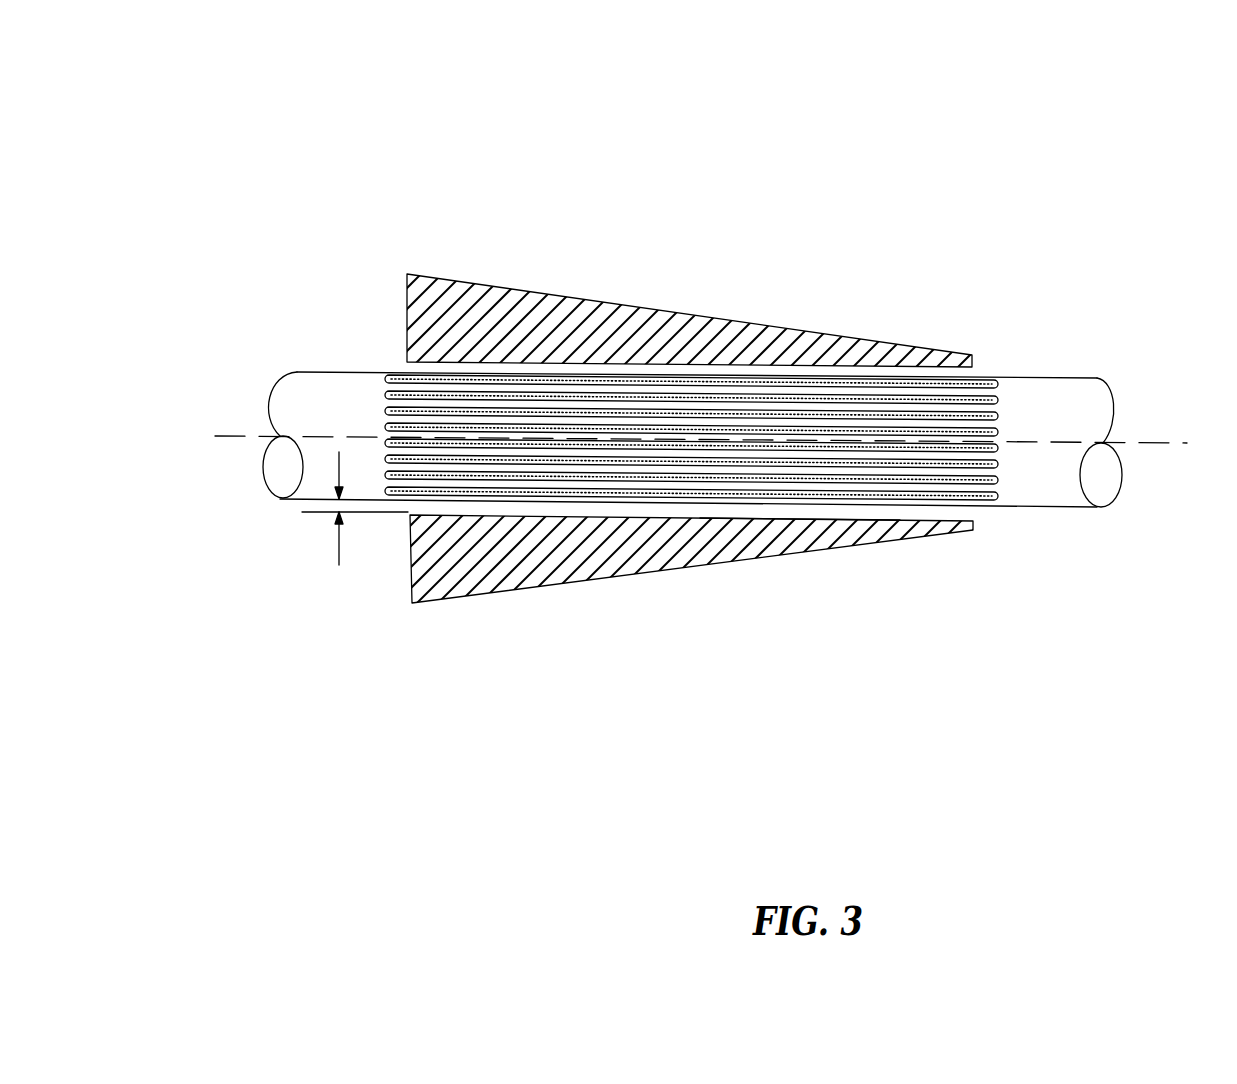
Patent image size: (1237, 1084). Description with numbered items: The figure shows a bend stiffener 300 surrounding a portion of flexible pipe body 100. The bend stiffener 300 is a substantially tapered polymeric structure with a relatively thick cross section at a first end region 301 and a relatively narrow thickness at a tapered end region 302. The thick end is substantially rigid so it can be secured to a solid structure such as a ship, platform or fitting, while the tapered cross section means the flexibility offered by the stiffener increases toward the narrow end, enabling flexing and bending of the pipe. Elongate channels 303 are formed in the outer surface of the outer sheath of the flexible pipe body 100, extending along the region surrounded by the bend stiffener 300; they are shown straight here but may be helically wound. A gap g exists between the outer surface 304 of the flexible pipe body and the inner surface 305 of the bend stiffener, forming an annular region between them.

The flexible pipe body 100 is at (1033, 493).
The bend stiffener 300 is at (557, 567).
The first end region 301 is at (488, 198).
The tapered end region 302 is at (950, 235).
The elongate channels 303 is at (385, 378).
The outer surface of the flexible pipe body 304 is at (995, 377).
The inner surface of the bend stiffener 305 is at (763, 510).
The gap g is at (337, 515).